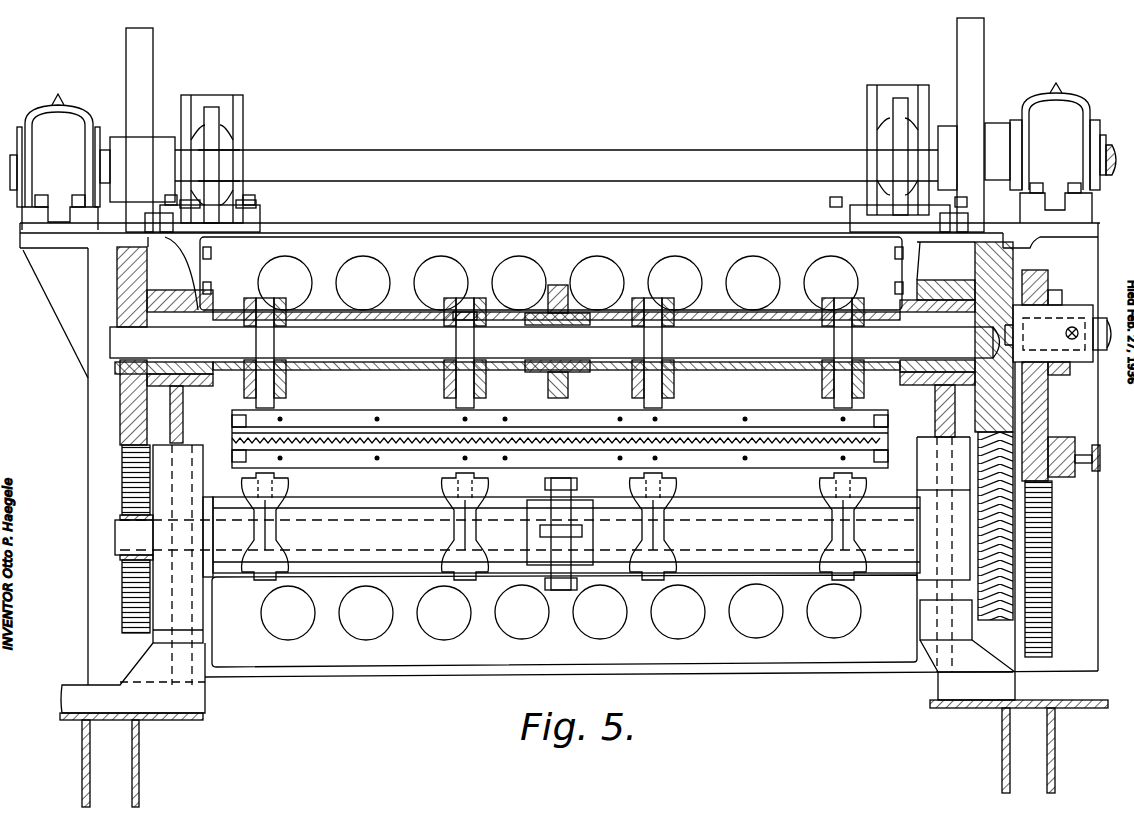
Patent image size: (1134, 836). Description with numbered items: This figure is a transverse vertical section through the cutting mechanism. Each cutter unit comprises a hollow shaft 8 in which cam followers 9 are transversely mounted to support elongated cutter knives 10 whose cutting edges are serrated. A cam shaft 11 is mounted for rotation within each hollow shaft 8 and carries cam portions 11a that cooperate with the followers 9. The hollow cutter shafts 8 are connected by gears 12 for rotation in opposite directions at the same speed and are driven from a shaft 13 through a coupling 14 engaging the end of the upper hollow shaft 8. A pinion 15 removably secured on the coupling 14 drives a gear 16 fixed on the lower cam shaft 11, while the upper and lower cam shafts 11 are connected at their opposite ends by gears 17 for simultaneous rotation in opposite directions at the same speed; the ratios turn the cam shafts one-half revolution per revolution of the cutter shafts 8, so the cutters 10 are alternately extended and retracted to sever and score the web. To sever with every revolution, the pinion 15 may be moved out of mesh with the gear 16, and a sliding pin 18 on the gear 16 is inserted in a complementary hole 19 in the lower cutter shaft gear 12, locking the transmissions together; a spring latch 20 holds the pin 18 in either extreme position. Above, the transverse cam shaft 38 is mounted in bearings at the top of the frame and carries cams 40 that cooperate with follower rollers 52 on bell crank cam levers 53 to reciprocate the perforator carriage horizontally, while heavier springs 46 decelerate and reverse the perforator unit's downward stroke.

The hollow shaft 8 is at (333, 305).
The cam followers 9 is at (262, 388).
The cutter knives 10 is at (300, 437).
The cam shaft 11 is at (414, 325).
The cam portions 11a is at (470, 330).
The gears 12 is at (1010, 432).
The shaft 13 is at (1100, 320).
The coupling 14 is at (1077, 305).
The pinion 15 is at (1050, 277).
The gear 16 is at (1050, 612).
The gears 17 is at (122, 448).
The sliding pin 18 is at (1094, 462).
The hole 19 is at (1050, 480).
The spring latch 20 is at (1052, 440).
The transverse cam shaft 38 is at (517, 150).
The cams 40 is at (213, 160).
The heavier springs 46 is at (856, 96).
The follower rollers 52 is at (212, 118).
The bell crank cam lever 53 is at (258, 95).